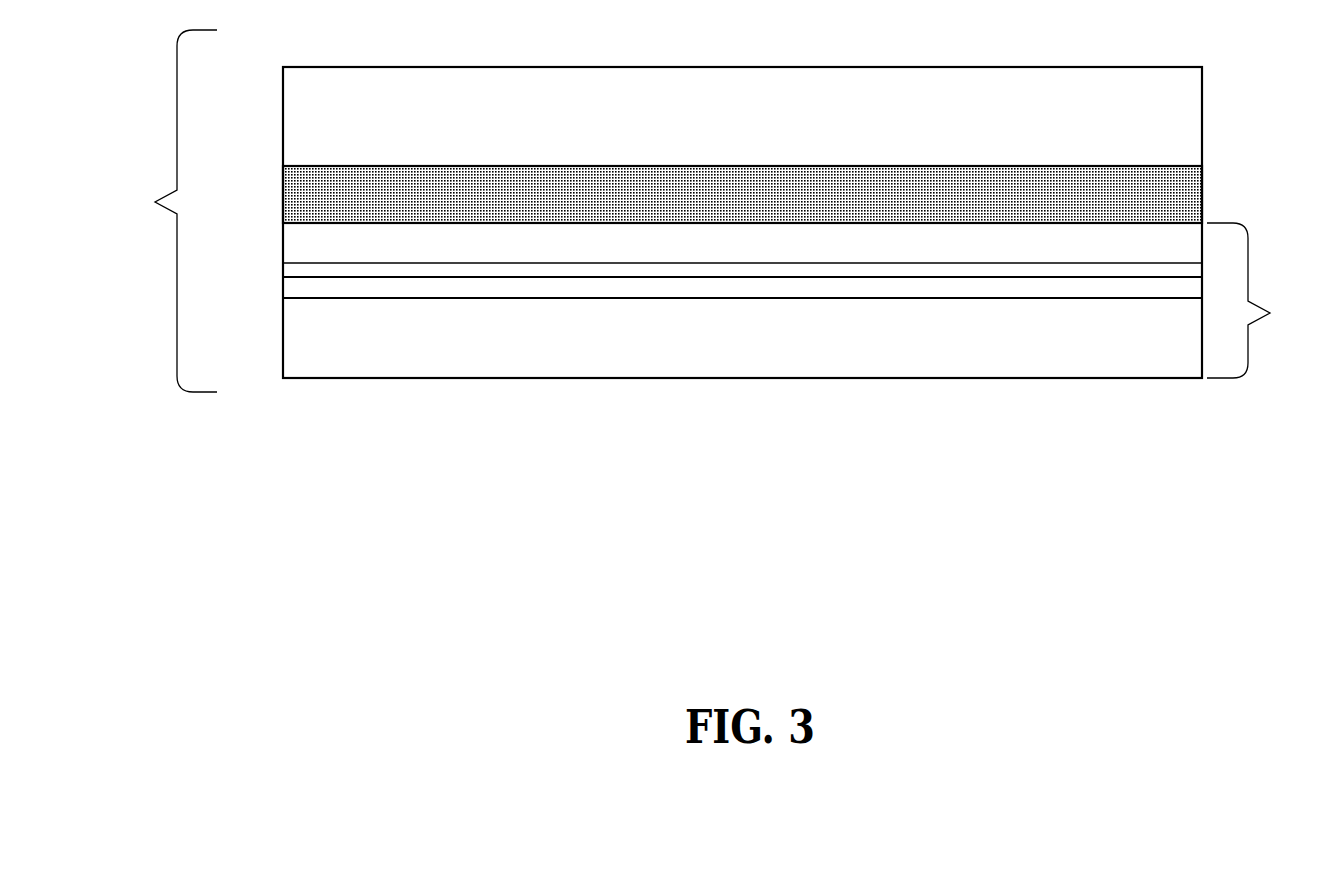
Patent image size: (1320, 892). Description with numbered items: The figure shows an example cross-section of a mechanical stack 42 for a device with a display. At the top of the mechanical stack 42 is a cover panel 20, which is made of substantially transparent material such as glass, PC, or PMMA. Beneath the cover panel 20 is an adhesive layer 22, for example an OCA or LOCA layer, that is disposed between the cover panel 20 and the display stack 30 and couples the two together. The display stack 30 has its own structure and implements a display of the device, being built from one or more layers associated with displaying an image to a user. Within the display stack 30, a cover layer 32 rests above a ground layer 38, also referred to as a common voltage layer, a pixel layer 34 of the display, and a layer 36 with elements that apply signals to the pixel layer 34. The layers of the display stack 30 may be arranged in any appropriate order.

The cover panel 20 is at (1215, 122).
The adhesive layer 22 is at (272, 187).
The display stack 30 is at (1263, 300).
The cover layer 32 is at (742, 375).
The pixel layer 34 is at (742, 402).
The layer 36 is at (742, 422).
The ground layer 38 is at (699, 423).
The mechanical stack 42 is at (134, 211).